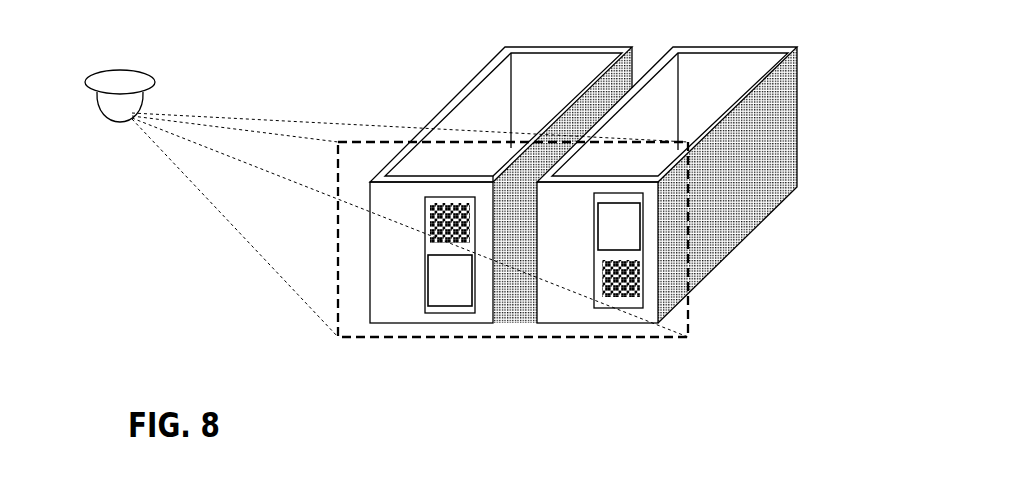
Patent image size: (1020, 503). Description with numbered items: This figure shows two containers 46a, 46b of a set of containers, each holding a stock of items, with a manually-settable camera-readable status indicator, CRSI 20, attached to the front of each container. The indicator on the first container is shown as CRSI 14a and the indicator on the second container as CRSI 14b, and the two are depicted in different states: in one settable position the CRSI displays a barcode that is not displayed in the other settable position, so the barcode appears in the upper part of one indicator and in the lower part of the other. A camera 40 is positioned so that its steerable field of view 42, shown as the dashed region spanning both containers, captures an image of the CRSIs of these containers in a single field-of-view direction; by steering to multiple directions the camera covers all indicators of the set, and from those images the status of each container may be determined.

The camera 40 is at (117, 110).
The field of view 42 is at (642, 337).
The container 46a is at (410, 216).
The container 46b is at (580, 216).
The camera-readable status indicator 20 is at (504, 293).
The camera-readable status indicator 14a is at (433, 307).
The camera-readable status indicator 14b is at (597, 307).